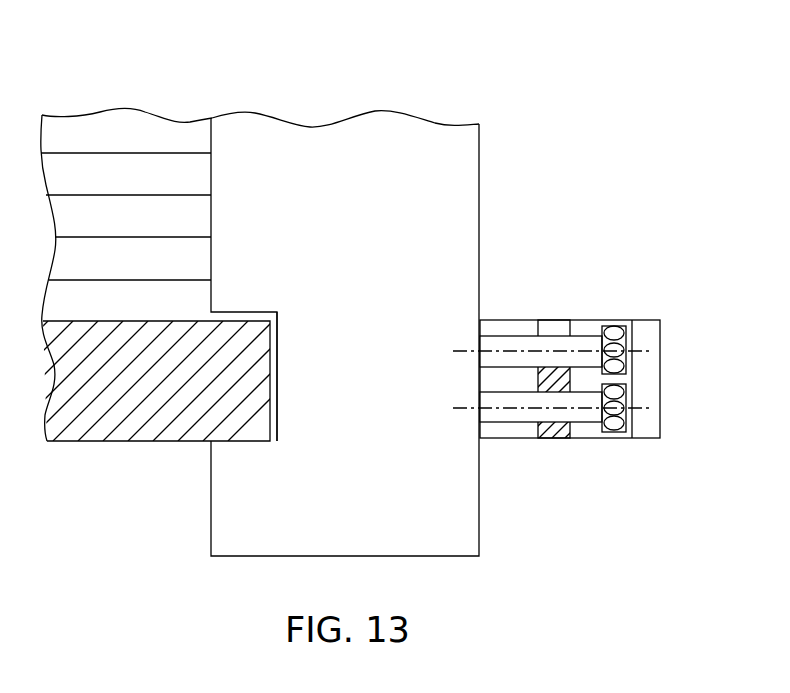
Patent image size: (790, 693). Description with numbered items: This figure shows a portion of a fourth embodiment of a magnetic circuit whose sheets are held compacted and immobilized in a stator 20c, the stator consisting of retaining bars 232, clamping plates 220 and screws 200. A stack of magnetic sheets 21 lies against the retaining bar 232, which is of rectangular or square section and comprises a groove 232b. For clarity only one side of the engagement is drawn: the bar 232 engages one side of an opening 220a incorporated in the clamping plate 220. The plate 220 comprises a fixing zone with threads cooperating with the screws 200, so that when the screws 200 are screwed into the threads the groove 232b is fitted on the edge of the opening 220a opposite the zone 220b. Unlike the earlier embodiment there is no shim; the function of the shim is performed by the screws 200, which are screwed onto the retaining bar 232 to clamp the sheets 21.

The stator 20c is at (547, 74).
The magnetic sheet 21 is at (119, 104).
The retaining bar 232 is at (481, 211).
The groove 232b is at (279, 380).
The clamping plate 220 is at (120, 444).
The opening 220a is at (513, 316).
The fixing zone 220b is at (560, 318).
The screw 200 is at (568, 370).